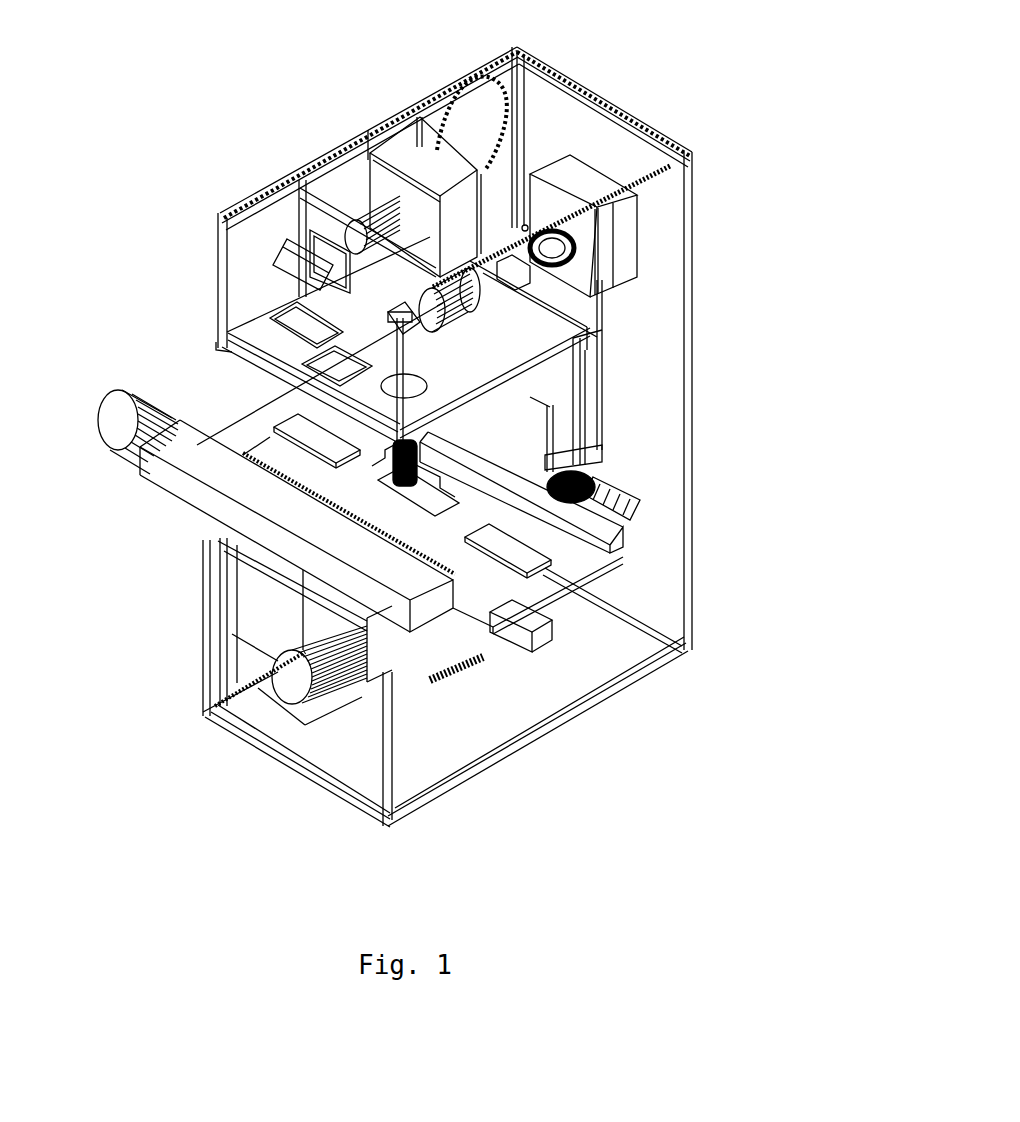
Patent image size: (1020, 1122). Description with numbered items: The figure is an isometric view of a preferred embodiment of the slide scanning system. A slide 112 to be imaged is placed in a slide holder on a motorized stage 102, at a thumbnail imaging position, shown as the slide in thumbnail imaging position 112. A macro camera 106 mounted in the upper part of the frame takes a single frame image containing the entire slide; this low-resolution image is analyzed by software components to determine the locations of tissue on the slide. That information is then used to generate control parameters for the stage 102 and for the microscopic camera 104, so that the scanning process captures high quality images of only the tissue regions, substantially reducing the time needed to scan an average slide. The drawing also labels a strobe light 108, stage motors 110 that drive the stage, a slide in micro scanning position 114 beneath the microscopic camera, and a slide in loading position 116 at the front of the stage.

The motorized stage 102 is at (620, 547).
The microscopic camera 104 is at (637, 215).
The macro camera 106 is at (348, 143).
The strobe light 108 is at (345, 375).
The stage motor 110 is at (243, 788).
The slide 112 is at (310, 448).
The slide in micro scanning position 114 is at (437, 517).
The slide in loading position 116 is at (687, 647).